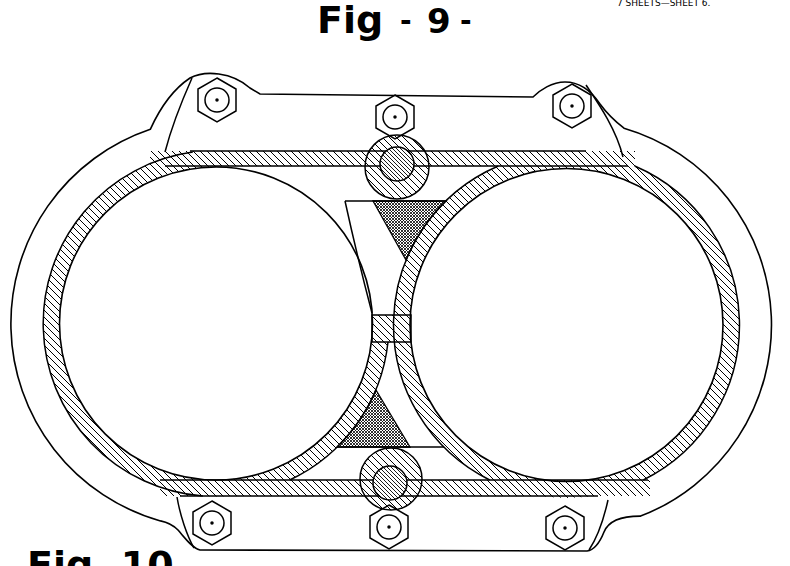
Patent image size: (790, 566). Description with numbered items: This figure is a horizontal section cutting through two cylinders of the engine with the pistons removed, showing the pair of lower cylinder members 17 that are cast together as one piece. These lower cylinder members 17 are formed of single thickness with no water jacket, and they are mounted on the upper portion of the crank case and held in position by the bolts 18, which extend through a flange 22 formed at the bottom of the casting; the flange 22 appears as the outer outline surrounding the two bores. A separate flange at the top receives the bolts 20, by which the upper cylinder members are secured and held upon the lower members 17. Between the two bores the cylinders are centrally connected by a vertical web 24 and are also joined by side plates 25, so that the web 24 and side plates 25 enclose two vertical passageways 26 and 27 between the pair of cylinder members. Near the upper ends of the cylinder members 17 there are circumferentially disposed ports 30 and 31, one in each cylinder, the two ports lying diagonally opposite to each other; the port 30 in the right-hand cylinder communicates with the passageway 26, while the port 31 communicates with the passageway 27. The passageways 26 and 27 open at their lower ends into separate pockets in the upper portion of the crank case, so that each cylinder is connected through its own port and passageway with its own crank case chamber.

The lower cylinder member 17 is at (58, 313).
The bolt 18 is at (222, 97).
The bolt 20 is at (405, 160).
The flange 22 is at (670, 493).
The vertical web 24 is at (397, 345).
The side plate 25 is at (322, 153).
The vertical passageway 26 is at (358, 447).
The vertical passageway 27 is at (409, 230).
The port 30 is at (427, 415).
The port 31 is at (355, 240).